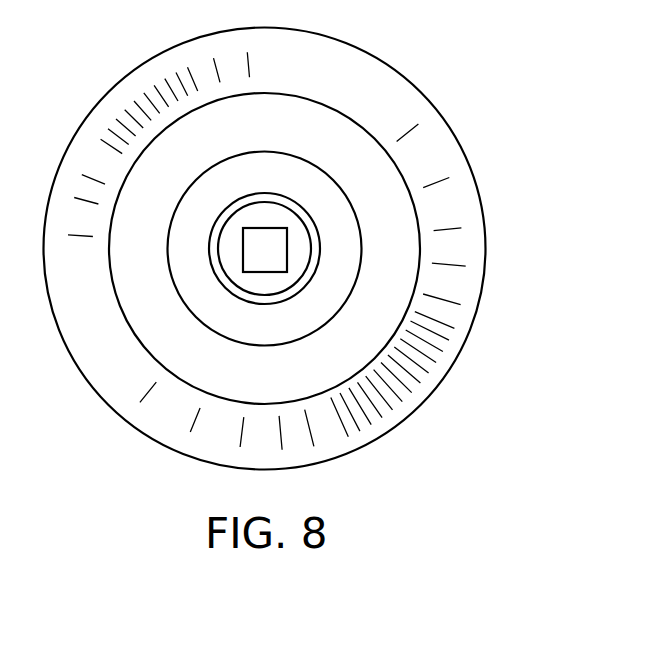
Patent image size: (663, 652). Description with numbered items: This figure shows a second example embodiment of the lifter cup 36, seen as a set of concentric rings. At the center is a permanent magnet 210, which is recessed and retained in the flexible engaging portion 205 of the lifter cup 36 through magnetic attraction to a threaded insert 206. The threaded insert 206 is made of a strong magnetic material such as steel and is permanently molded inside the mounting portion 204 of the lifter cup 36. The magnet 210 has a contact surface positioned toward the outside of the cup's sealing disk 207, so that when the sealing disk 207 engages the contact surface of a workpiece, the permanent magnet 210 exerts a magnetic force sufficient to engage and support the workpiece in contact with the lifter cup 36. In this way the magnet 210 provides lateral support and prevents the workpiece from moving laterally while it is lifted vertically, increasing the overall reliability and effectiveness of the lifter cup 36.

The lifter cup 36 is at (474, 114).
The mounting portion 204 is at (333, 109).
The flexible engaging portion 205 is at (482, 253).
The threaded insert 206 is at (265, 305).
The sealing disk 207 is at (476, 325).
The permanent magnet 210 is at (258, 228).